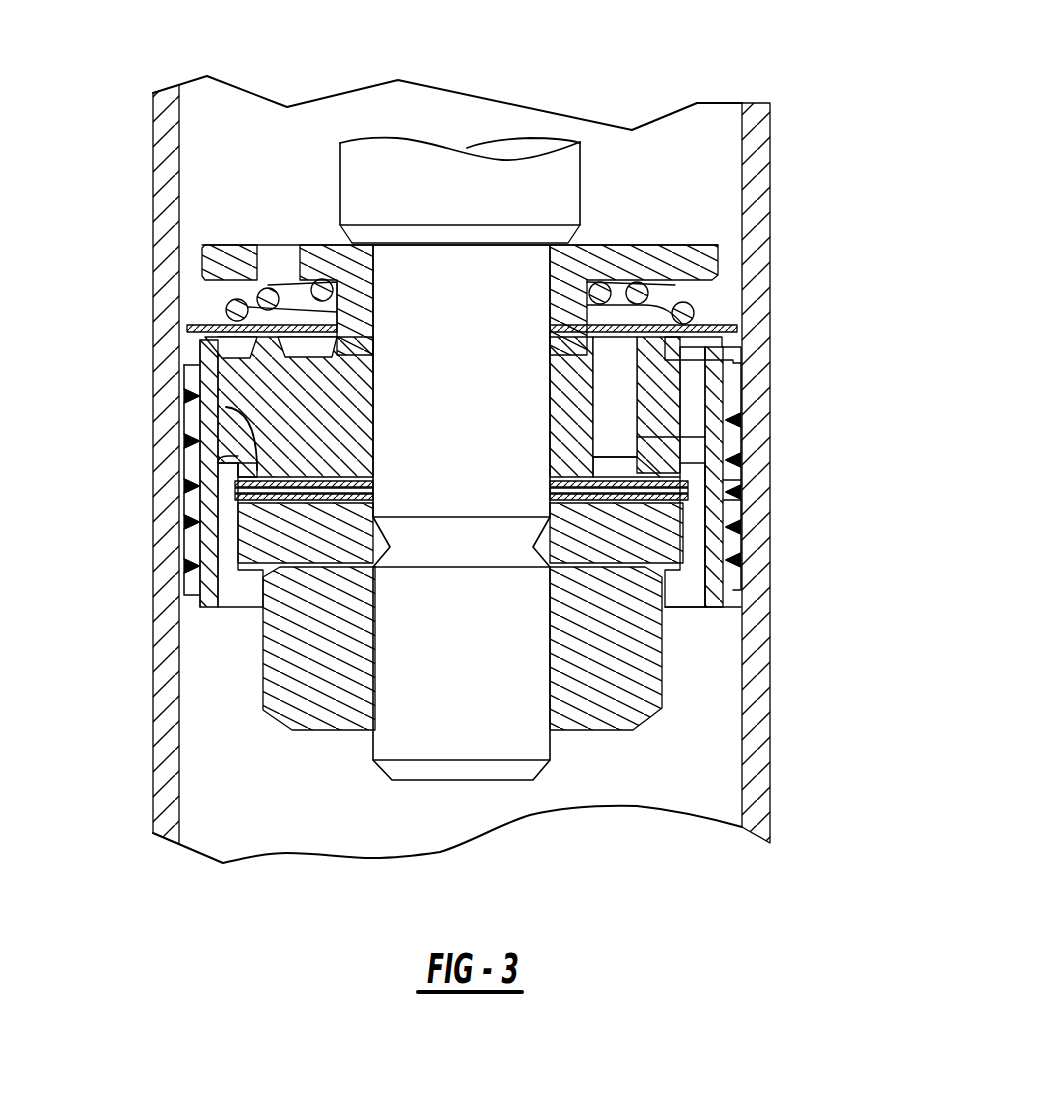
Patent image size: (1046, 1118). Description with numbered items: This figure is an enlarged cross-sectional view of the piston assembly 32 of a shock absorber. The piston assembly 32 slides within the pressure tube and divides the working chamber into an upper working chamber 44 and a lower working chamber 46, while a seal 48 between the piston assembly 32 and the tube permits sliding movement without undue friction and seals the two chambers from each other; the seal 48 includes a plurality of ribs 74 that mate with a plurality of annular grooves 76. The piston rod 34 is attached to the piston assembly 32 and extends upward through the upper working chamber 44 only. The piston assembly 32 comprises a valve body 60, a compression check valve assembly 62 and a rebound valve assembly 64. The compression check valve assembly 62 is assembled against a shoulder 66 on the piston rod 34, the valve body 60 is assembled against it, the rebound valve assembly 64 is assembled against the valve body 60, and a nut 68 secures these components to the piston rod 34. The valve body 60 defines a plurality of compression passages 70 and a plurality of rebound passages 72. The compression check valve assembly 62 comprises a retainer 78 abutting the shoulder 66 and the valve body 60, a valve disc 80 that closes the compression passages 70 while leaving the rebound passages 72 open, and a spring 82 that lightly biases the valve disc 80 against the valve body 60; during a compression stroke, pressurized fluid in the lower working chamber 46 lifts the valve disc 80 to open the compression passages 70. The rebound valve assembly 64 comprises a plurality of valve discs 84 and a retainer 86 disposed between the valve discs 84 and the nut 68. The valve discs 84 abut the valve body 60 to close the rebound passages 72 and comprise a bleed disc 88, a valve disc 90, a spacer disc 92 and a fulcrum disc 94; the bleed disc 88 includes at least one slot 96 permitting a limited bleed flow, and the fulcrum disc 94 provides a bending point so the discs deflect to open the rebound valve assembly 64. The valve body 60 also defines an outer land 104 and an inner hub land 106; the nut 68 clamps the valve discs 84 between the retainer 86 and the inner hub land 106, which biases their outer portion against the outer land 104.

The piston assembly 32 is at (677, 143).
The piston rod 34 is at (441, 203).
The upper working chamber 44 is at (219, 143).
The lower working chamber 46 is at (666, 779).
The seal 48 is at (737, 490).
The valve body 60 is at (693, 382).
The compression check valve assembly 62 is at (660, 204).
The rebound valve assembly 64 is at (683, 632).
The shoulder 66 is at (418, 248).
The nut 68 is at (295, 713).
The compression passages 70 is at (722, 357).
The rebound passages 72 is at (720, 414).
The ribs 74 is at (728, 527).
The annular grooves 76 is at (733, 553).
The retainer 78 is at (233, 253).
The valve disc 80 is at (188, 327).
The spring 82 is at (228, 308).
The valve discs 84 is at (232, 483).
The retainer 86 is at (262, 562).
The bleed disc 88 is at (240, 476).
The valve disc 90 is at (228, 487).
The spacer disc 92 is at (300, 489).
The fulcrum disc 94 is at (312, 499).
The slot 96 is at (226, 407).
The outer land 104 is at (670, 470).
The inner hub land 106 is at (568, 457).